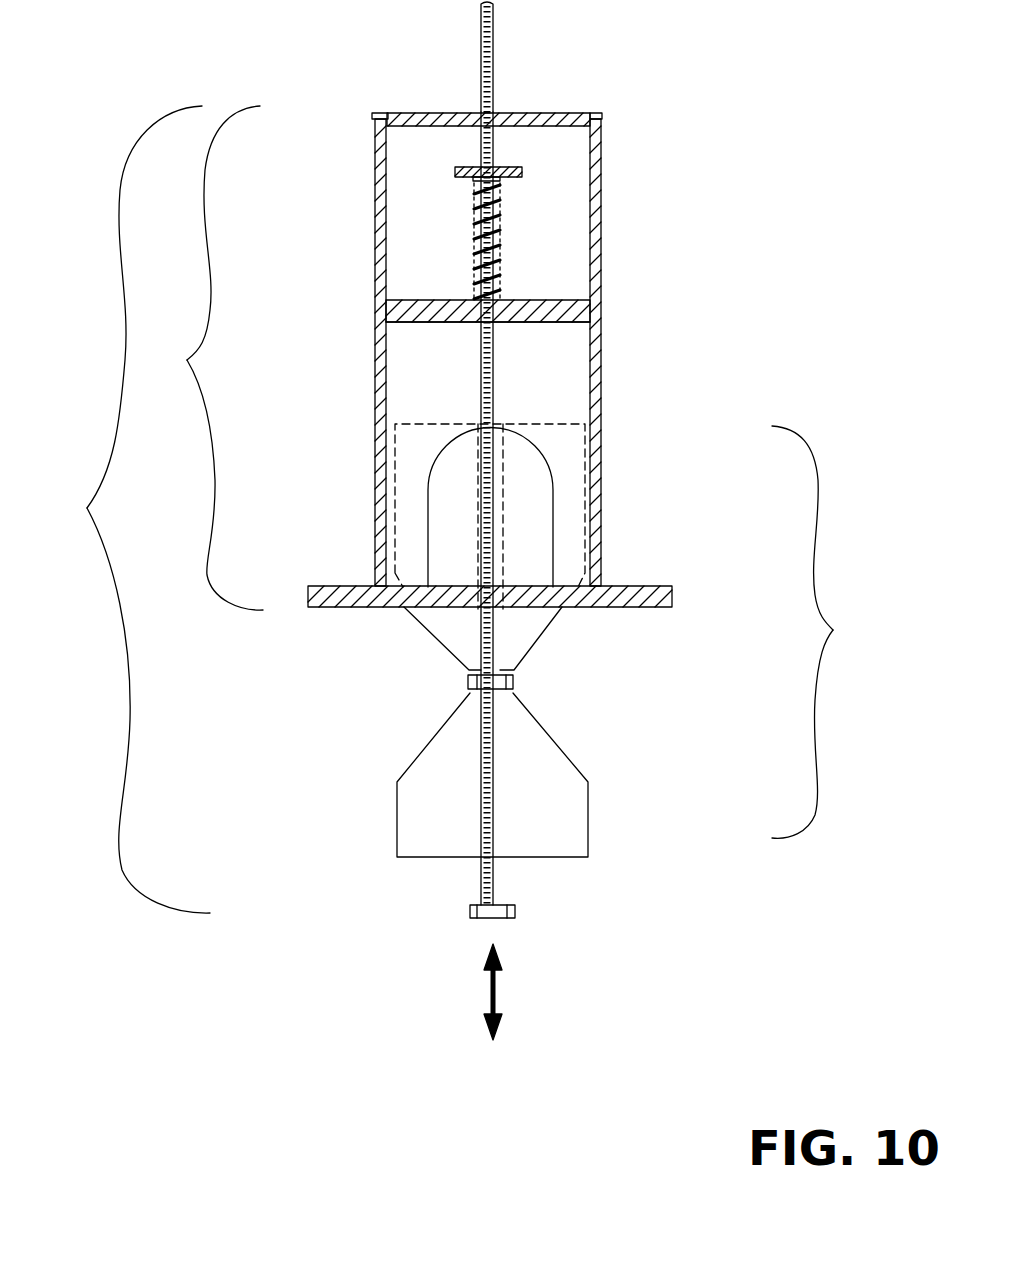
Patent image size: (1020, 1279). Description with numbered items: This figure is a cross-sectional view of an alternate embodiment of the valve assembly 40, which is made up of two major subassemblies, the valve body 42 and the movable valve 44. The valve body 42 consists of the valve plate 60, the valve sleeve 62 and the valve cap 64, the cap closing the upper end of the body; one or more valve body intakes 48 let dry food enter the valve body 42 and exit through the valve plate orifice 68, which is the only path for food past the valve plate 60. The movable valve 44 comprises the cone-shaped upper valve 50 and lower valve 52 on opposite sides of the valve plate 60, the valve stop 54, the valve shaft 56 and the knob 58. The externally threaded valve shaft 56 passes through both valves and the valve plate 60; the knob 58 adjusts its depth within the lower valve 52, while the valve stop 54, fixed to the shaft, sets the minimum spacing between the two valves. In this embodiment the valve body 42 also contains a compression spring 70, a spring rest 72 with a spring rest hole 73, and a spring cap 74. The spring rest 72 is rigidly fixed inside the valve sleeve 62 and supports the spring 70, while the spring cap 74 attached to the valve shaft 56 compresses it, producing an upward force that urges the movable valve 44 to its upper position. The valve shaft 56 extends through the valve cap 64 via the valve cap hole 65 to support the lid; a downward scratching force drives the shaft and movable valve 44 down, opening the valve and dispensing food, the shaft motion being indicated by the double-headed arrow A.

The valve assembly 40 is at (127, 509).
The valve body 42 is at (205, 358).
The movable valve 44 is at (824, 632).
The valve body intake 48 is at (547, 500).
The upper valve 50 is at (550, 622).
The lower valve 52 is at (588, 790).
The valve stop 54 is at (517, 681).
The valve shaft 56 is at (496, 870).
The knob 58 is at (470, 912).
The valve plate 60 is at (677, 594).
The valve sleeve 62 is at (377, 327).
The valve cap 64 is at (372, 116).
The valve cap hole 65 is at (480, 113).
The valve plate orifice 68 is at (500, 300).
The compression spring 70 is at (476, 268).
The spring rest 72 is at (590, 312).
The spring rest hole 73 is at (497, 323).
The spring cap 74 is at (456, 173).
The direction of movement A is at (503, 996).